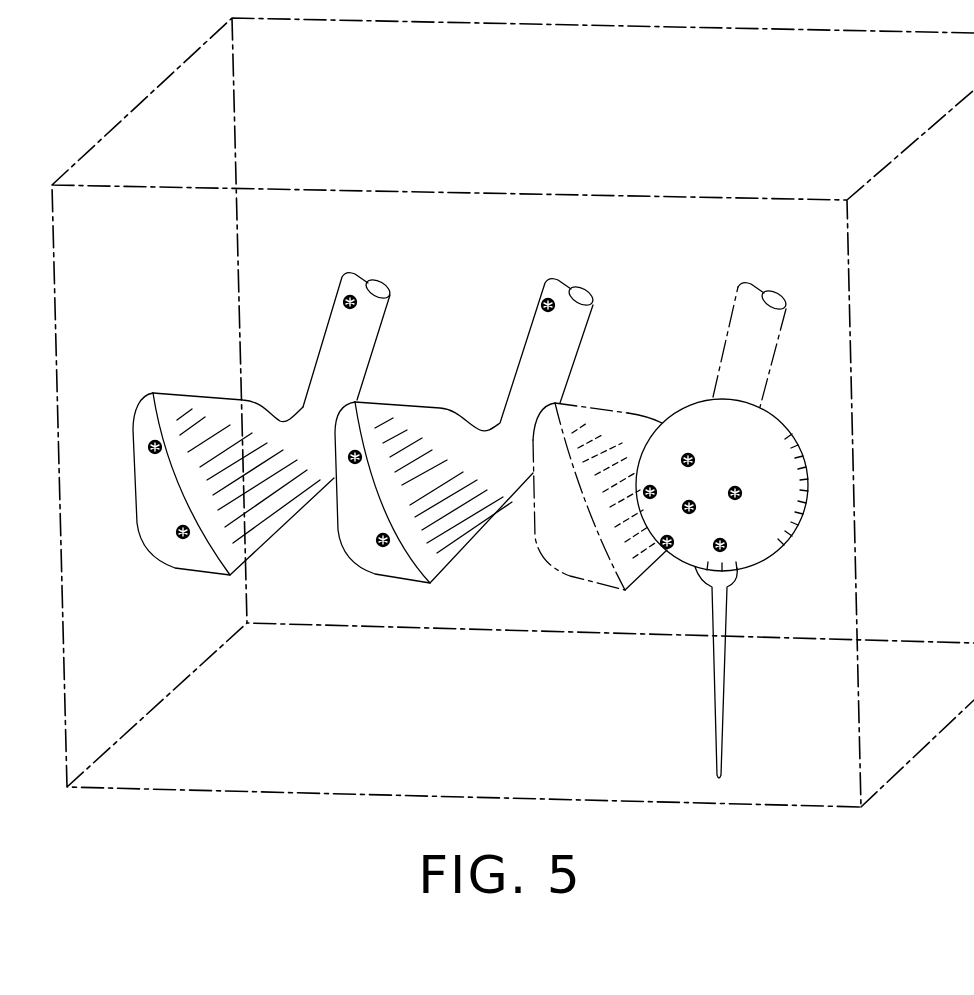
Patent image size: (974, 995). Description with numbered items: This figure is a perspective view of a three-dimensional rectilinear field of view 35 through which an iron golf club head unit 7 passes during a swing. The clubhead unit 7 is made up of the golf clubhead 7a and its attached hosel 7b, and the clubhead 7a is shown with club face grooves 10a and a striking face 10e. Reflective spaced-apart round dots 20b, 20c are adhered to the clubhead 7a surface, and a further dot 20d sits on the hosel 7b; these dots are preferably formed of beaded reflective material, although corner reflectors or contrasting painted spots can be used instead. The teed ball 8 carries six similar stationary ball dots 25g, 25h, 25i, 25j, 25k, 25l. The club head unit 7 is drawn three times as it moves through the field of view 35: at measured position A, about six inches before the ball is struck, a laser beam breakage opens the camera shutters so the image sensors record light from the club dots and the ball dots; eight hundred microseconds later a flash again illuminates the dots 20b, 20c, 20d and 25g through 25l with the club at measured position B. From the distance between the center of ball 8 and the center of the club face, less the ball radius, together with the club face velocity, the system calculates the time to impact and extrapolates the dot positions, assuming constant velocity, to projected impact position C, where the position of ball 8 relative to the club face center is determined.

The three-dimensional field of view 35 is at (787, 118).
The clubhead unit 7 is at (258, 424).
The golf clubhead 7a is at (222, 396).
The hosel 7b is at (367, 325).
The club face groove 10a is at (188, 412).
The striking face 10e is at (214, 476).
The reflective round dot 20b is at (151, 442).
The reflective round dot 20c is at (179, 538).
The hosel screw 20d is at (344, 302).
The teed ball 8 is at (777, 400).
The ball dot 25g is at (690, 453).
The ball dot 25h is at (697, 511).
The ball dot 25i is at (741, 497).
The ball dot 25j is at (726, 551).
The ball dot 25k is at (680, 541).
The ball dot 25l is at (652, 485).
The measured position A is at (278, 562).
The measured position B is at (475, 575).
The projected impact position C is at (571, 578).